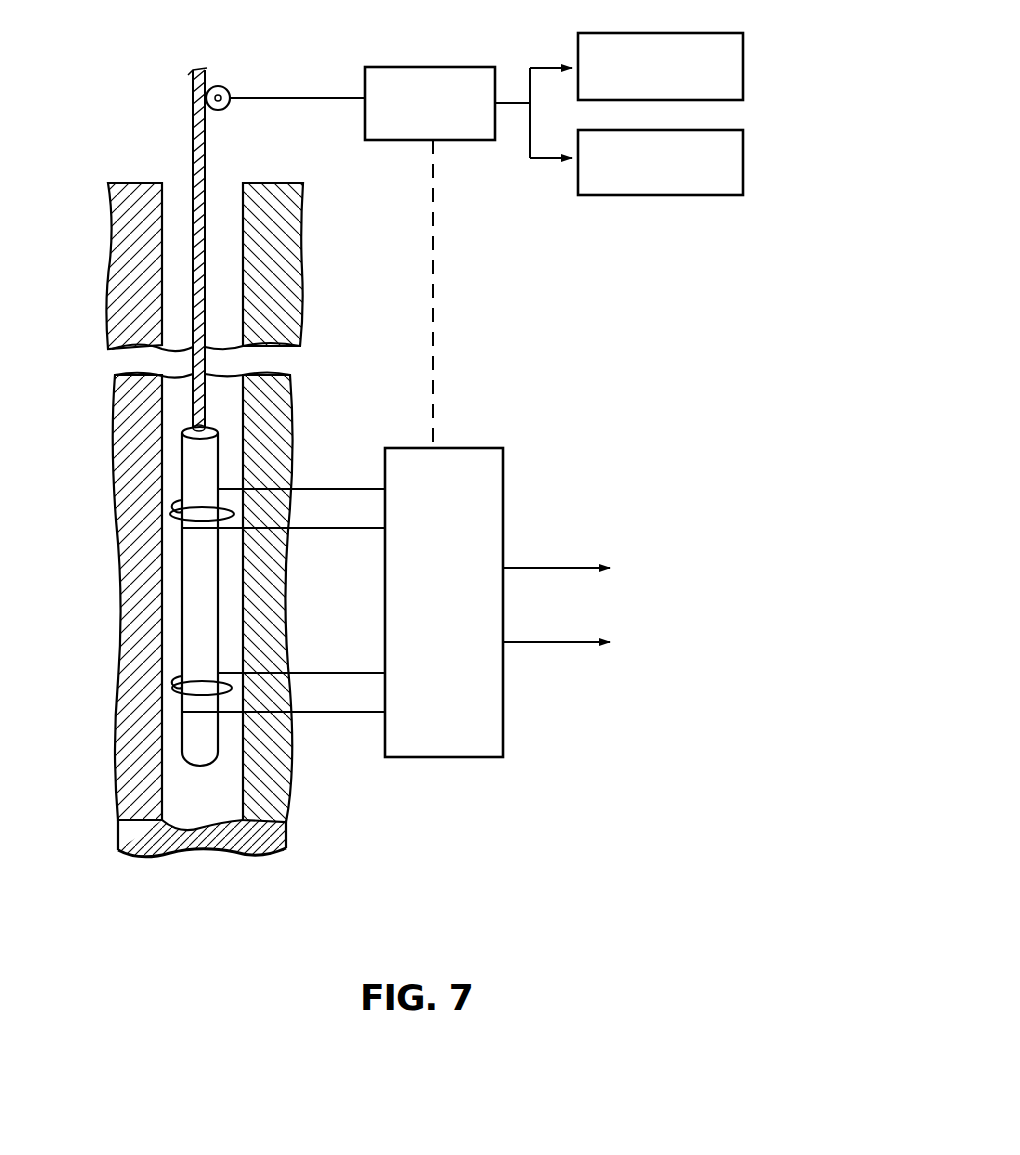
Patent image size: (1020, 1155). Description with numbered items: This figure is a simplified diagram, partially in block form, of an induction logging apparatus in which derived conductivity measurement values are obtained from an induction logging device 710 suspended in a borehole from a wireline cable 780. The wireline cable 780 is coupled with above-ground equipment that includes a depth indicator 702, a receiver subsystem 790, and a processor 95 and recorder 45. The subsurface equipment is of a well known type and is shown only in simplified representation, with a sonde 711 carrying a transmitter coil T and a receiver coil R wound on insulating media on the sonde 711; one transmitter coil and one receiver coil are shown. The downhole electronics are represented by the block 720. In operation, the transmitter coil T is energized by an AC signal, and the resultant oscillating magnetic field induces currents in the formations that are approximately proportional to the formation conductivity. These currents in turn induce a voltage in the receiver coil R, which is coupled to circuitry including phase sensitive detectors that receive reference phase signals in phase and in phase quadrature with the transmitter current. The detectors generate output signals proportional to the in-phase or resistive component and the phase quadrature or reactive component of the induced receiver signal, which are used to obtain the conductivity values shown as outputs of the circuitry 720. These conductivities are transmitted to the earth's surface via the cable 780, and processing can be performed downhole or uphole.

The depth indicator 702 is at (231, 90).
The wireline cable 780 is at (192, 279).
The receiver subsystem 790 is at (400, 67).
The processor 95 is at (716, 33).
The recorder 45 is at (732, 128).
The induction logging device 710 is at (160, 440).
The sonde 711 is at (190, 586).
The transmitter coil T is at (172, 512).
The receiver coil R is at (215, 708).
The downhole electronics 720 is at (470, 745).